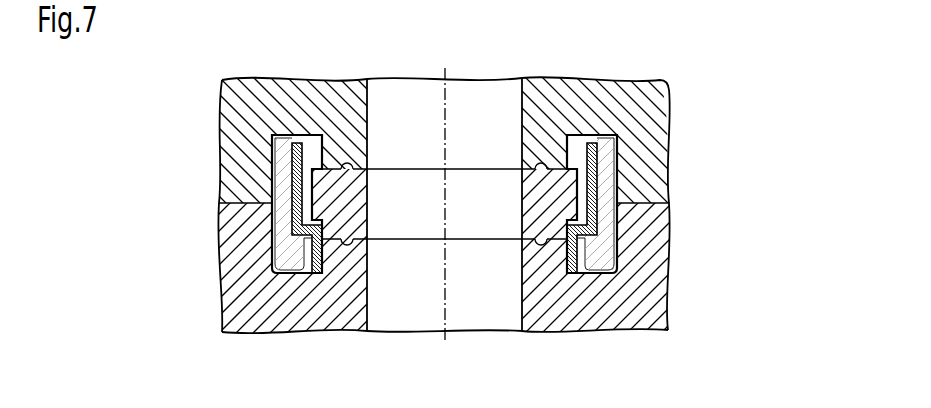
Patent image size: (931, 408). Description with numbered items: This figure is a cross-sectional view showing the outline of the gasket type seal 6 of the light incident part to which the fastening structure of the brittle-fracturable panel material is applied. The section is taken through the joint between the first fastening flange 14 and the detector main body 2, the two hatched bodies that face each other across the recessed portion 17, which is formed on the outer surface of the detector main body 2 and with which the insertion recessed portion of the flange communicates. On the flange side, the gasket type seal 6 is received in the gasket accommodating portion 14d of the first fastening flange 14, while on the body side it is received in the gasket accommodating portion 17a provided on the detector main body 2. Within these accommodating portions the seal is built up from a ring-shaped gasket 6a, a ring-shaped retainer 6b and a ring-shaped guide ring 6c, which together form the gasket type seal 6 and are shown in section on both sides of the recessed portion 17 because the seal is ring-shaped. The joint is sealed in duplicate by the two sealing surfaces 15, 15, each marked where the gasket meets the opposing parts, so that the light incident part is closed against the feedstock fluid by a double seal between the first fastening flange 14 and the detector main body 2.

The detector main body 2 is at (627, 297).
The gasket type seal 6 is at (683, 130).
The ring-shaped gasket 6a is at (550, 202).
The ring-shaped retainer 6b is at (596, 183).
The ring-shaped guide ring 6c is at (600, 245).
The first fastening flange 14 is at (632, 108).
The gasket accommodating portion 14d is at (577, 147).
The sealing surface 15 is at (347, 169).
The recessed portion 17 is at (463, 116).
The gasket accommodating portion 17a is at (578, 270).